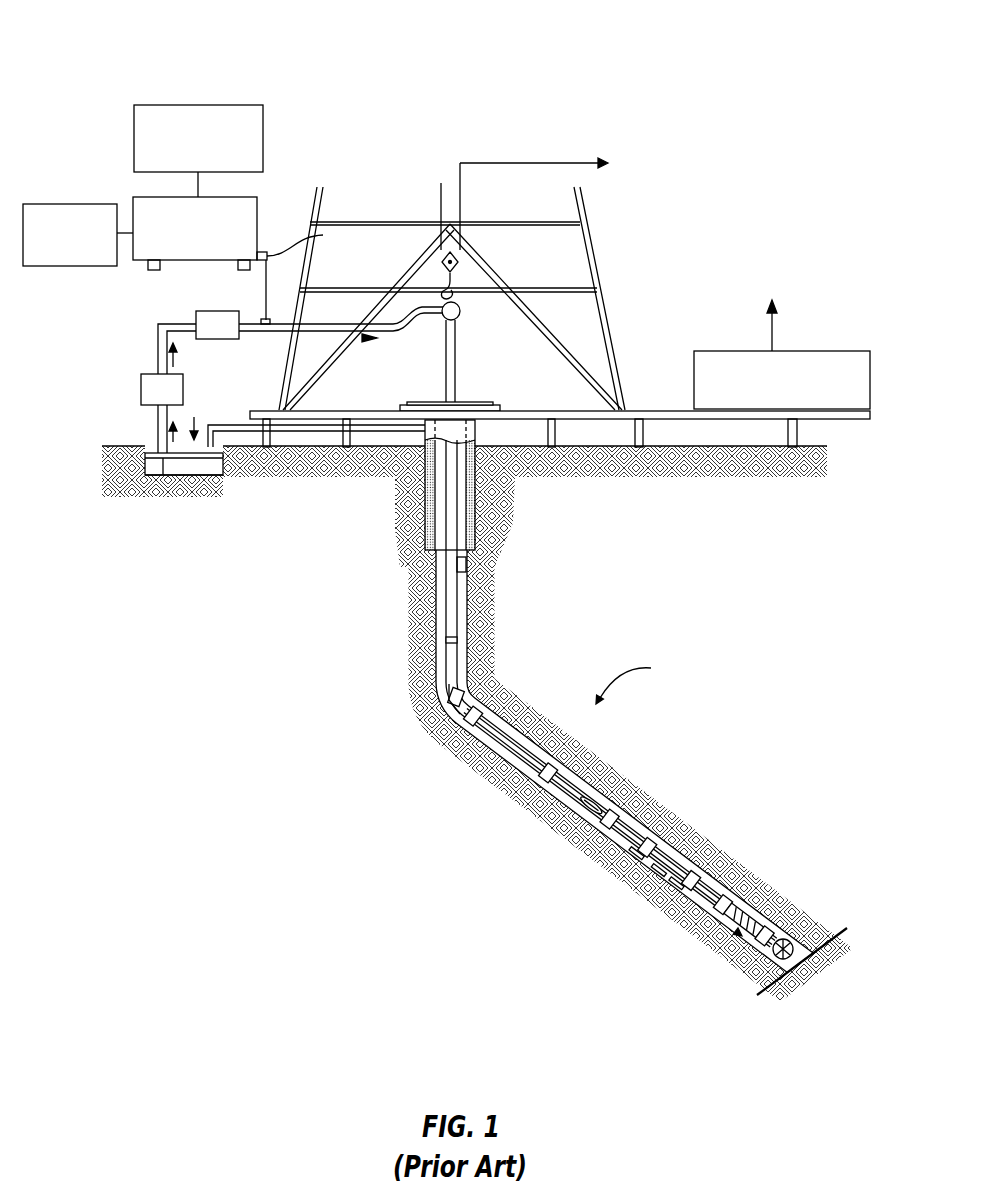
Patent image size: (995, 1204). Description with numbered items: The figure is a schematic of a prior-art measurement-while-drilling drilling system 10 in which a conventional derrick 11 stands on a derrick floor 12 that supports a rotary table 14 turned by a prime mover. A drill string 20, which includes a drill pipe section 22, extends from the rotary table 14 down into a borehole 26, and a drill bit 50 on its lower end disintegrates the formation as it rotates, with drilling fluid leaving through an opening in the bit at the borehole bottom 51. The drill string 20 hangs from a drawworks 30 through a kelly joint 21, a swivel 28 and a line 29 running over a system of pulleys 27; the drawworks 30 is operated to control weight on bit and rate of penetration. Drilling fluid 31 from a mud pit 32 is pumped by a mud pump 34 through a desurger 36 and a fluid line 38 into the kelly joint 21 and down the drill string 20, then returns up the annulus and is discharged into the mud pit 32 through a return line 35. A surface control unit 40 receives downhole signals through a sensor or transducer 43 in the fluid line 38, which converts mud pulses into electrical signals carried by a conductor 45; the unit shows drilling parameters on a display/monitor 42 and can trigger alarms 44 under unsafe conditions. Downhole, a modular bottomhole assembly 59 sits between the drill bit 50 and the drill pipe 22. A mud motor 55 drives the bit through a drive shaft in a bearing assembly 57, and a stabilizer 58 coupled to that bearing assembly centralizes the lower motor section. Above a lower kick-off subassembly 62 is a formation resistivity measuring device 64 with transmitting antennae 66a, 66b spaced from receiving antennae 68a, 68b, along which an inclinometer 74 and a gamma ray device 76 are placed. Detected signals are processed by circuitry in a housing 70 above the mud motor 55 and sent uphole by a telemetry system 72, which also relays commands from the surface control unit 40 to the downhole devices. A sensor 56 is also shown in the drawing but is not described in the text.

The drilling system 10 is at (122, 52).
The derrick 11 is at (607, 283).
The derrick floor 12 is at (628, 407).
The rotary table 14 is at (477, 400).
The drill string 20 is at (468, 570).
The kelly joint 21 is at (460, 353).
The drill pipe section 22 is at (443, 630).
The borehole 26 is at (470, 687).
The system of pulleys 27 is at (480, 703).
The swivel 28 is at (440, 317).
The line 29 is at (462, 210).
The drawworks 30 is at (807, 351).
The drilling fluid 31 is at (160, 475).
The mud pit 32 is at (212, 477).
The mud pump 34 is at (140, 388).
The return line 35 is at (295, 432).
The desurger 36 is at (200, 312).
The fluid line 38 is at (263, 333).
The surface control unit 40 is at (257, 197).
The display/monitor 42 is at (215, 105).
The sensor 43 is at (267, 318).
The alarms 44 is at (53, 204).
The conductor 45 is at (310, 240).
The drill bit 50 is at (820, 933).
The borehole bottom 51 is at (760, 998).
The mud motor 55 is at (555, 742).
The sensor 56 is at (587, 762).
The bearing assembly 57 is at (737, 932).
The stabilizer 58 is at (768, 920).
The downhole subassembly 59 is at (638, 680).
The lower kick-off subassembly 62 is at (742, 910).
The formation resistivity measuring device 64 is at (658, 872).
The transmitting antenna 66a is at (597, 830).
The transmitting antenna 66b is at (675, 885).
The receiving antenna 68a is at (633, 857).
The receiving antenna 68b is at (657, 840).
The housing 70 is at (473, 715).
The telemetry system 72 is at (452, 675).
The inclinometer 74 is at (683, 867).
The gamma ray device 76 is at (717, 893).